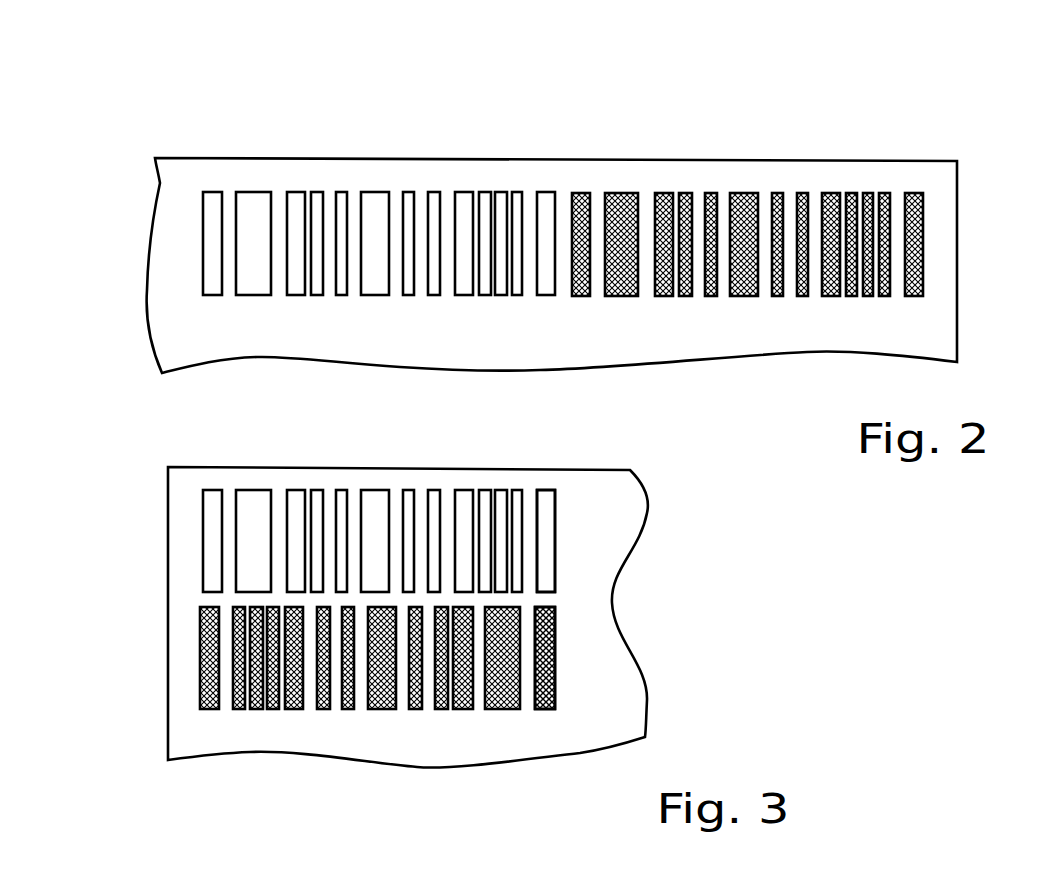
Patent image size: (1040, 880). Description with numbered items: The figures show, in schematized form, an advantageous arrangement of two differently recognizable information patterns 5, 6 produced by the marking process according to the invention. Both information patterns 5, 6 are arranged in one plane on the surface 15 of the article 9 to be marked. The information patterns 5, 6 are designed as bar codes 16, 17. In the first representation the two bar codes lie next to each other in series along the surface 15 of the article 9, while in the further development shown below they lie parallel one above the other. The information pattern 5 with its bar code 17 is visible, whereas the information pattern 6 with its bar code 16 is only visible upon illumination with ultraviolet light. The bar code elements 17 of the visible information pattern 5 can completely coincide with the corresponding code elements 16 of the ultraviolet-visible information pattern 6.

In FIG. 2, the article 9 is at (146, 258).
In FIG. 3, the article 9 is at (167, 576).
In FIG. 2, the surface 15 is at (367, 171).
In FIG. 3, the surface 15 is at (430, 598).
In FIG. 2, the information pattern 5 is at (375, 191).
In FIG. 3, the information pattern 5 is at (560, 503).
In FIG. 2, the bar code 17 is at (465, 200).
In FIG. 3, the bar code 17 is at (545, 573).
In FIG. 2, the information pattern 6 is at (688, 191).
In FIG. 3, the information pattern 6 is at (555, 679).
In FIG. 2, the bar code 16 is at (743, 203).
In FIG. 3, the bar code 16 is at (553, 620).